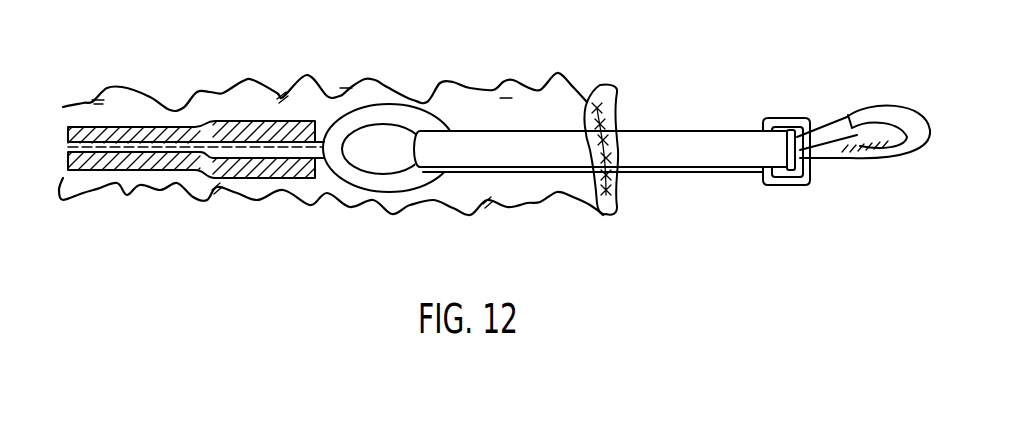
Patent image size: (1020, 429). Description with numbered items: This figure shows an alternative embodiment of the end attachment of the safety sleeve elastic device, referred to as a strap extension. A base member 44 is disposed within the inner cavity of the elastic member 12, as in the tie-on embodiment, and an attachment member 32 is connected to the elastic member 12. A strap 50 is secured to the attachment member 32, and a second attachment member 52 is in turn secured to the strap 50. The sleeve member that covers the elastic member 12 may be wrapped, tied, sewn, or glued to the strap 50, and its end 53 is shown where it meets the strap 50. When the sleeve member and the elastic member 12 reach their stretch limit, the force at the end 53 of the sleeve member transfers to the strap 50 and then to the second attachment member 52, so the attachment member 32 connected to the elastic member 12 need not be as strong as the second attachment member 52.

The elastic member 12 is at (213, 117).
The base member 44 is at (282, 148).
The attachment member 32 is at (397, 117).
The strap 50 is at (675, 145).
The end of the sleeve member 53 is at (593, 83).
The second attachment member 52 is at (845, 106).